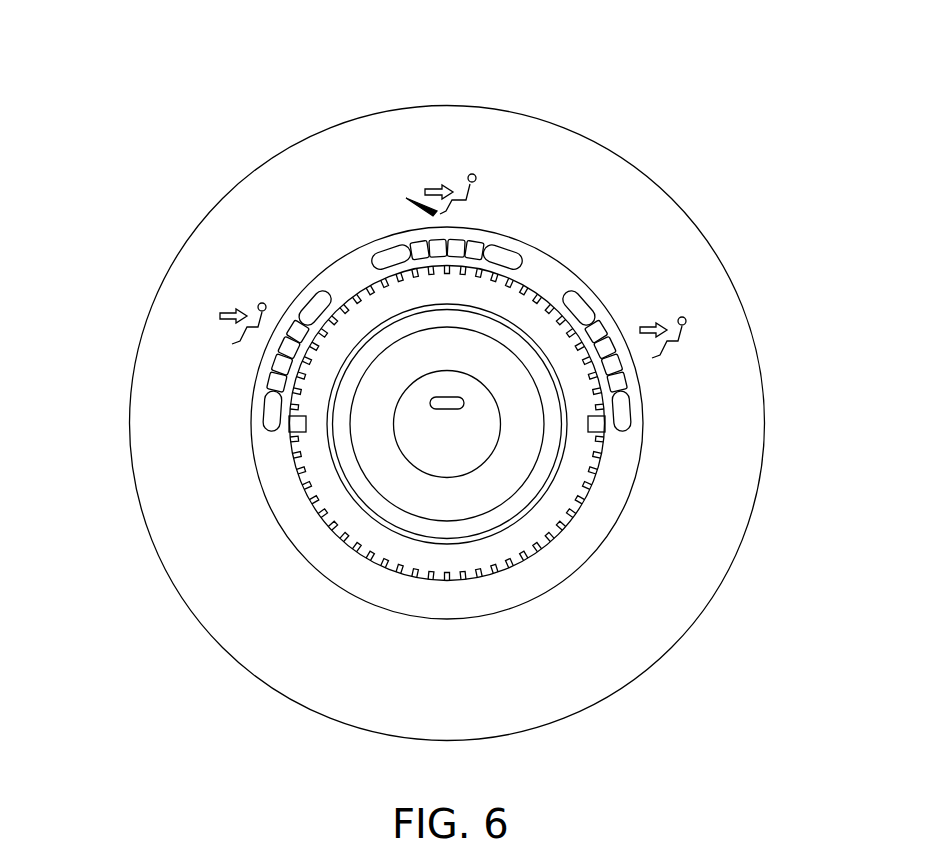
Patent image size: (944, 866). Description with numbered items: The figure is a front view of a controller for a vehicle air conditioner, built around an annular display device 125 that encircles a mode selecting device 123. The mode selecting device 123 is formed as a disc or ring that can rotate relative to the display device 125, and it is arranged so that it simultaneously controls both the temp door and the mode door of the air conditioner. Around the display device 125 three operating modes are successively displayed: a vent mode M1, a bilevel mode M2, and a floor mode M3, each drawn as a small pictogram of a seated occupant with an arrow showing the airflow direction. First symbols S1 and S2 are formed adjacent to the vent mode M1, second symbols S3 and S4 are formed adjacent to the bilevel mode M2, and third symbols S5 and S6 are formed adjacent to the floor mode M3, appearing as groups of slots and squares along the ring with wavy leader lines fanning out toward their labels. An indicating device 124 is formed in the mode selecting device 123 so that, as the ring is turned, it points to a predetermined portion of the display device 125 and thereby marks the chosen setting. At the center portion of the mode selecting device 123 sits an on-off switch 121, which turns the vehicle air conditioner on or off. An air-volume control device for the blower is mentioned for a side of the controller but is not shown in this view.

The on-off switch 121 is at (465, 447).
The mode selecting device 123 is at (335, 500).
The indicating device 124 is at (272, 428).
The display device 125 is at (326, 296).
The first symbol S1 is at (296, 424).
The first symbol S2 is at (291, 354).
The second symbol S3 is at (378, 255).
The second symbol S4 is at (513, 255).
The third symbol S5 is at (678, 275).
The third symbol S6 is at (721, 393).
The vent mode M1 is at (220, 316).
The bilevel mode M2 is at (437, 240).
The floor mode M3 is at (688, 332).